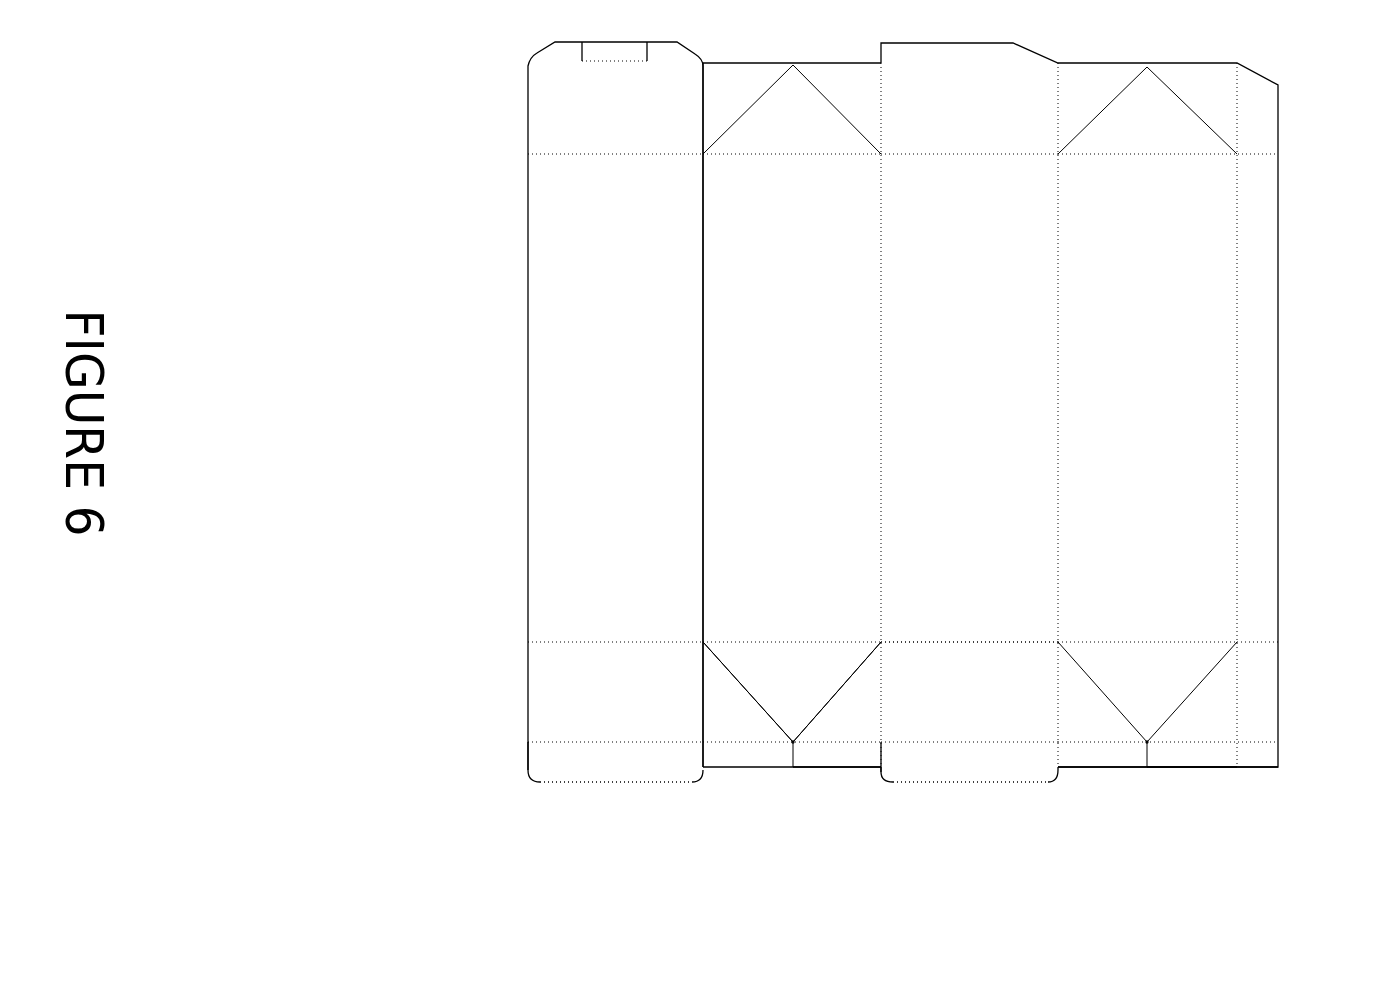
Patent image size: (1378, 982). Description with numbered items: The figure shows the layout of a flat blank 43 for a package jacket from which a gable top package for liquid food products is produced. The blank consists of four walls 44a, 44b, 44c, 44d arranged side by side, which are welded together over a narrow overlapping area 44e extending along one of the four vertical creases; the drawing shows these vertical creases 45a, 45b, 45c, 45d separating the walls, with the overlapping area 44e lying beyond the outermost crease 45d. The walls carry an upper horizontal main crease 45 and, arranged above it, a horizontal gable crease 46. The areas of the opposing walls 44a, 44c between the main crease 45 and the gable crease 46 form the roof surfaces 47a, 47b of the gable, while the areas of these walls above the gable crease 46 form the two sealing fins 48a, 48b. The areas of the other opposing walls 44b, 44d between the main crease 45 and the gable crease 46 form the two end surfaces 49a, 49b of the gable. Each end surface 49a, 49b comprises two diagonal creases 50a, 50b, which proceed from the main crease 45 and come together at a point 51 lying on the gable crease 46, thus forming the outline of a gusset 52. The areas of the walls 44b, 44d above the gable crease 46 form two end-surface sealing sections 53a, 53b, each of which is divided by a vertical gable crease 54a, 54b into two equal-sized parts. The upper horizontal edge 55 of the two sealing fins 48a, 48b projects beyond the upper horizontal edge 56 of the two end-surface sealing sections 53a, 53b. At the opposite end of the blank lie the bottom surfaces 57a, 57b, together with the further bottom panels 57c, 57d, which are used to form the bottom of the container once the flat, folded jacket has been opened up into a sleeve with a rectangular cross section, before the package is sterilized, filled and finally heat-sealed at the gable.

The blank 43 is at (500, 477).
The wall 44a is at (582, 444).
The wall 44b is at (770, 445).
The wall 44c is at (938, 447).
The wall 44d is at (1125, 444).
The overlapping area 44e is at (1265, 503).
The main crease 45 is at (963, 643).
The fold line 45a is at (705, 408).
The fold line 45b is at (883, 413).
The fold line 45c is at (1059, 402).
The fold line 45d is at (1237, 373).
The gable crease 46 is at (726, 744).
The roof surface 47a is at (633, 680).
The roof surface 47b is at (1000, 688).
The sealing fin 48a is at (582, 768).
The sealing fin 48b is at (912, 762).
The end surface 49a is at (782, 671).
The end surface 49b is at (1144, 671).
The diagonal crease 50a is at (746, 690).
The diagonal crease 50b is at (841, 687).
The point 51 is at (793, 742).
The gusset 52 is at (770, 685).
The end-surface sealing section 53a is at (863, 757).
The end-surface sealing section 53b is at (1192, 748).
The vertical gable crease 54a is at (794, 745).
The vertical gable crease 54b is at (1146, 752).
The upper horizontal edge 55 is at (648, 784).
The upper horizontal edge 56 is at (753, 768).
The bottom surface 57a is at (592, 110).
The bottom surface 57b is at (768, 115).
The top flap 57c is at (993, 115).
The top flap 57d is at (1125, 117).